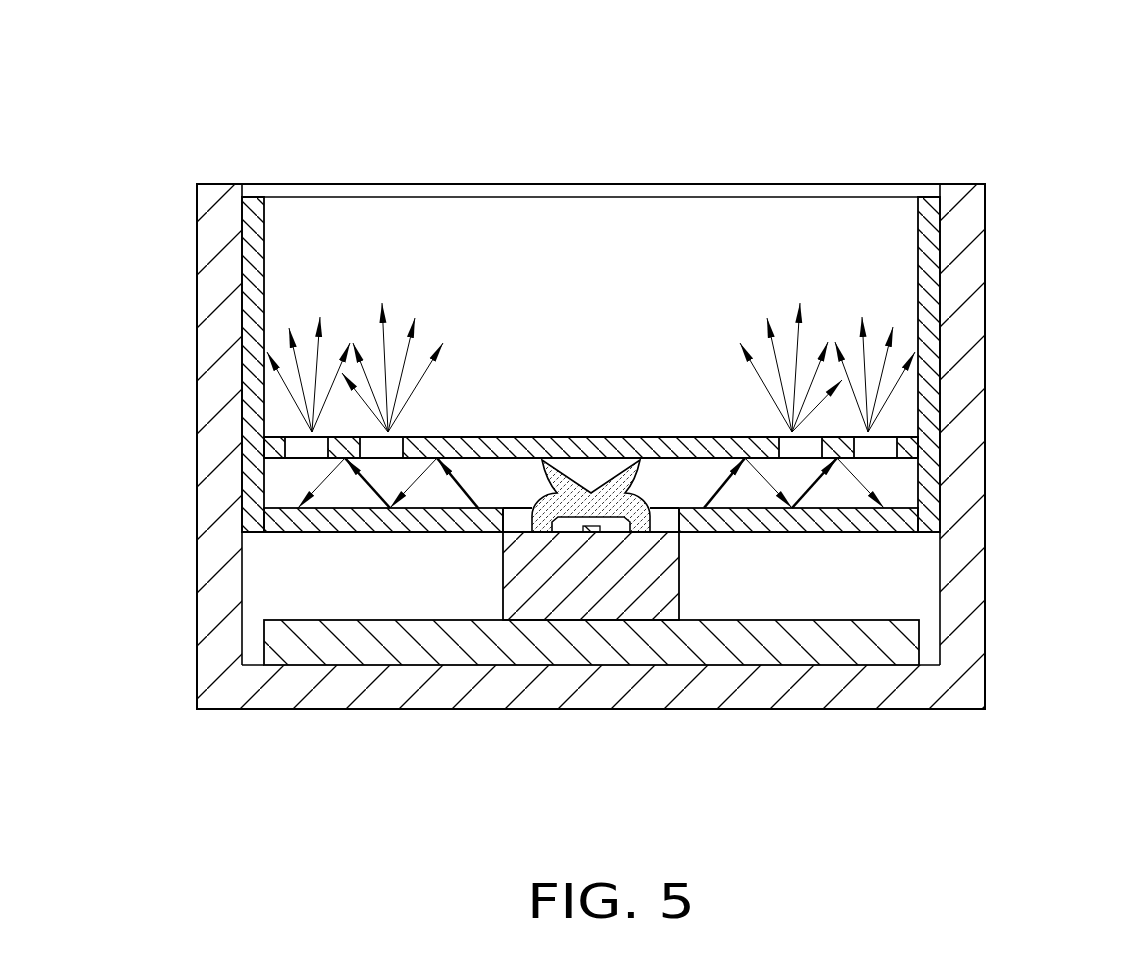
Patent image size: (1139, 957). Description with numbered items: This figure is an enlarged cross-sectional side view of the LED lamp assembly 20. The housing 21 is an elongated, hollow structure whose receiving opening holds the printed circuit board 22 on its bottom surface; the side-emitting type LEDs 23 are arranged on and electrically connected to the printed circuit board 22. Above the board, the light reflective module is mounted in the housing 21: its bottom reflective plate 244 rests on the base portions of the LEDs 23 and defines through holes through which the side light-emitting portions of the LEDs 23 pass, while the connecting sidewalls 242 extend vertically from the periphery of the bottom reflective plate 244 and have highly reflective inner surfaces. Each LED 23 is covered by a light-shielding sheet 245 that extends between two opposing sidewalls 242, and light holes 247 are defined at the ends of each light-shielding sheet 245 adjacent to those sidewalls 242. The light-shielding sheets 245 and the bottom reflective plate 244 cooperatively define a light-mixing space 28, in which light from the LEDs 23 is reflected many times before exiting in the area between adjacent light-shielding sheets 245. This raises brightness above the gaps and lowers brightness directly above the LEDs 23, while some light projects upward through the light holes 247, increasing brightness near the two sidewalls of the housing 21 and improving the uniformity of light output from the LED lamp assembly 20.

The LED lamp assembly 20 is at (619, 52).
The housing 21 is at (965, 635).
The printed circuit board 22 is at (800, 653).
The side-emitting type LED 23 is at (655, 598).
The connecting sidewall 242 is at (927, 233).
The bottom reflective plate 244 is at (347, 522).
The light-shielding sheet 245 is at (583, 447).
The light hole 247 is at (790, 431).
The light-mixing space 28 is at (895, 483).